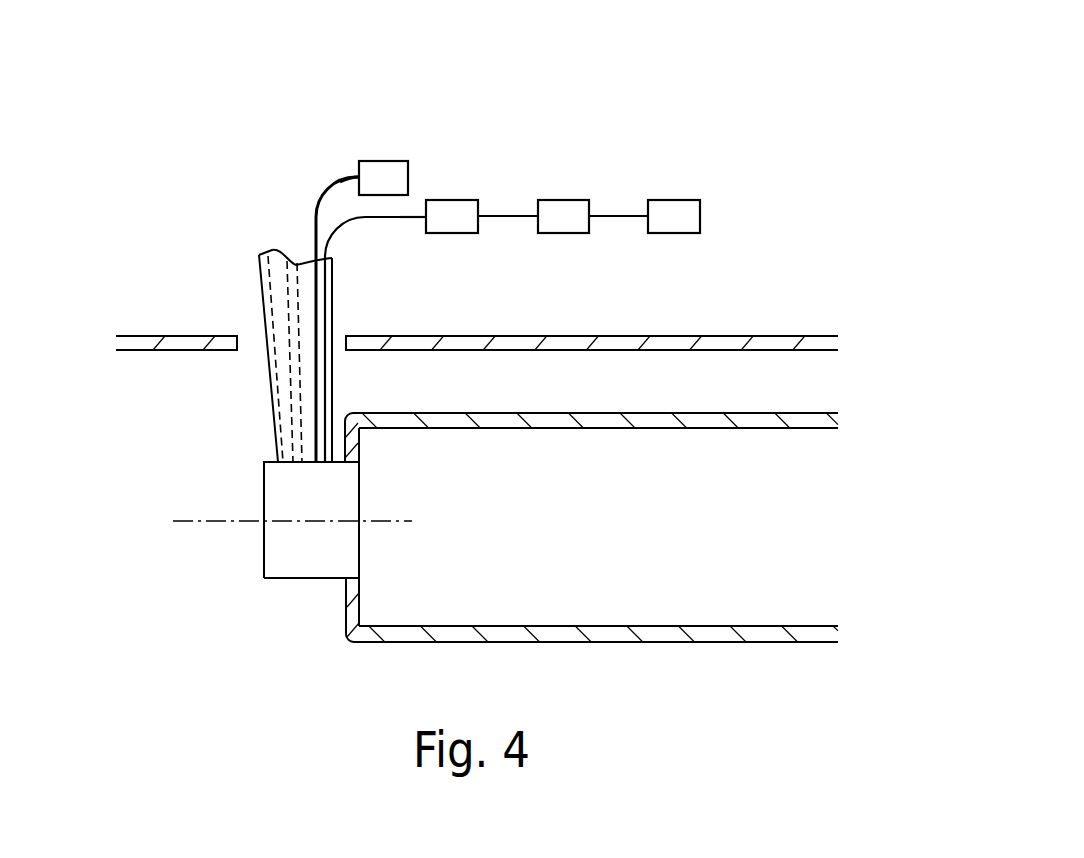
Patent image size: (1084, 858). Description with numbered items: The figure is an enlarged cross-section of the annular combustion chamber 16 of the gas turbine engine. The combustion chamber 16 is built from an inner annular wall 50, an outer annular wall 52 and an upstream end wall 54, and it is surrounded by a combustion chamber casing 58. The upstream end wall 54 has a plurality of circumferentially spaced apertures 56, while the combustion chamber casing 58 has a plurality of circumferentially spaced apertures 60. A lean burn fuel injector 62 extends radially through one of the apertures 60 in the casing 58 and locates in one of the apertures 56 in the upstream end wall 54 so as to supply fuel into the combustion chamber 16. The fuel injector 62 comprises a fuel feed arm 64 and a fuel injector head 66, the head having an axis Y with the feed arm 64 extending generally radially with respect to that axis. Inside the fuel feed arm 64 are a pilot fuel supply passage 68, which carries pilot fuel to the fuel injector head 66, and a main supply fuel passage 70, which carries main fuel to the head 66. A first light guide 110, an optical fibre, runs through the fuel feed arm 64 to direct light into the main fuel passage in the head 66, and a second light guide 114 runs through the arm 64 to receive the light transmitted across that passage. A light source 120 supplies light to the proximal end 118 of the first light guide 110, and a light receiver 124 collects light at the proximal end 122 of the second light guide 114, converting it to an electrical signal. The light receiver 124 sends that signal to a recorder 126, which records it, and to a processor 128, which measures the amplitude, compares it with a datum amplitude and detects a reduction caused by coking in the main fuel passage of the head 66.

The combustion chamber 16 is at (620, 502).
The inner annular wall 50 is at (608, 642).
The outer annular wall 52 is at (800, 413).
The upstream wall 54 is at (347, 437).
The apertures 56 is at (350, 577).
The combustion chamber casing 58 is at (805, 335).
The apertures 60 is at (342, 337).
The fuel injector 62 is at (263, 502).
The fuel feed arm 64 is at (275, 355).
The fuel injector head 66 is at (275, 553).
The pilot fuel supply passage 68 is at (260, 270).
The main supply fuel passage 70 is at (295, 265).
The first light guide 110 is at (317, 197).
The second light guide 114 is at (400, 218).
The proximal end 118 is at (358, 177).
The light source 120 is at (371, 168).
The proximal end 122 is at (413, 215).
The light receiver 124 is at (465, 215).
The recorder 126 is at (560, 215).
The processor 128 is at (675, 215).